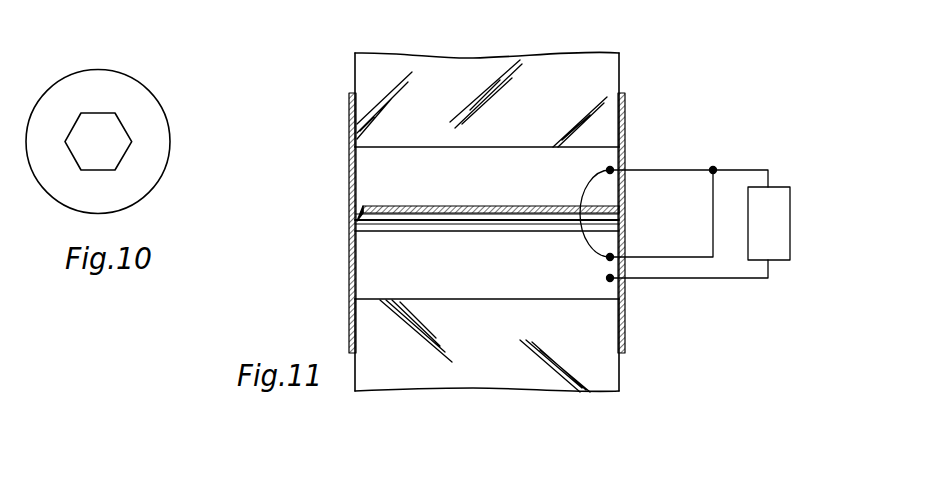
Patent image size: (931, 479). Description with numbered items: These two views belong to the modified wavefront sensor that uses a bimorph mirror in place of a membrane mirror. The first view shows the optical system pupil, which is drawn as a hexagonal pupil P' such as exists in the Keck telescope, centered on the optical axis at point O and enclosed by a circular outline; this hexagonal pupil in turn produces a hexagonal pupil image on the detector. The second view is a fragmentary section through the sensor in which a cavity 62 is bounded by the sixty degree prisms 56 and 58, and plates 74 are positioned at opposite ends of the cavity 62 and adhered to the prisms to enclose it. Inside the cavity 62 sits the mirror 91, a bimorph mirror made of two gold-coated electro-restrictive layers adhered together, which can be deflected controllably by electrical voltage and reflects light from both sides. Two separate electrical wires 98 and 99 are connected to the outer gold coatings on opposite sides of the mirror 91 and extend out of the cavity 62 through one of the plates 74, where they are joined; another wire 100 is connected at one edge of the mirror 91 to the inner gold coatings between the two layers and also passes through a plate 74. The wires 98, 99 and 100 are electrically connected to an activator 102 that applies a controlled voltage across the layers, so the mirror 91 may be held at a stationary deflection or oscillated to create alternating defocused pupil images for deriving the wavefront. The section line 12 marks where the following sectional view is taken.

In FIG. 11, the section line for FIG. 12 is at (486, 50).
In FIG. 11, the 60 degree prism 56 is at (585, 380).
In FIG. 11, the 60 degree prism 58 is at (581, 60).
In FIG. 11, the cavity 62 is at (370, 158).
In FIG. 11, the plates 74 is at (348, 307).
In FIG. 11, the mirror 91 is at (396, 207).
In FIG. 11, the electrical wire 98 is at (670, 170).
In FIG. 11, the electrical wire 99 is at (643, 257).
In FIG. 11, the wire 100 is at (712, 278).
In FIG. 11, the activator 102 is at (780, 198).
In FIG. 10, the hexagonal pupil P' is at (144, 98).
In FIG. 10, the center point O is at (97, 140).